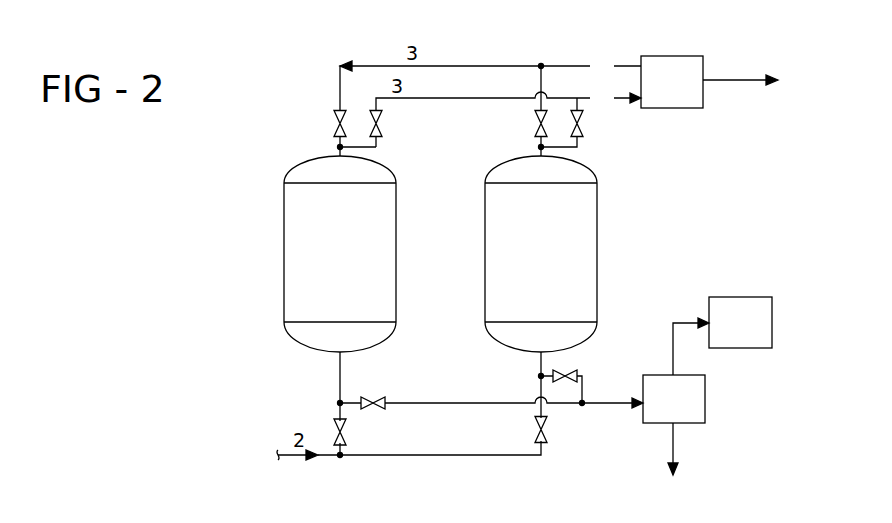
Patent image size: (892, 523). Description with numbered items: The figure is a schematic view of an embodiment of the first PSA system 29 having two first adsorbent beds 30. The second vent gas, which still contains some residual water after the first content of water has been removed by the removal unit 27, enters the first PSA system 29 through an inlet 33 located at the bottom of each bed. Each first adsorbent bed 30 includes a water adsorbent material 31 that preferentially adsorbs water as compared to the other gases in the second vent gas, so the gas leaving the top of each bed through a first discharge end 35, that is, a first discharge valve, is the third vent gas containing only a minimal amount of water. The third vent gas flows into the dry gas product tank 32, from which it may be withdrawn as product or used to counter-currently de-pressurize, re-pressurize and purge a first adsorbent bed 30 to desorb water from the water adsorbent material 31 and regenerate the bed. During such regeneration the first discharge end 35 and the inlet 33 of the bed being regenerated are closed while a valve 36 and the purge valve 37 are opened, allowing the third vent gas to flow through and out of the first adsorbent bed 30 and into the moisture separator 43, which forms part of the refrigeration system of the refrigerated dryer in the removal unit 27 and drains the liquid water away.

The removal unit 27 is at (772, 320).
The first PSA system 29 is at (426, 254).
The first adsorbent bed 30 is at (396, 303).
The water adsorbent material 31 is at (365, 258).
The dry gas product tank 32 is at (672, 56).
The inlet 33 is at (345, 432).
The first discharge end 35 is at (382, 124).
The valve 36 is at (369, 400).
The purge valve 37 is at (334, 124).
The moisture separator 43 is at (705, 398).